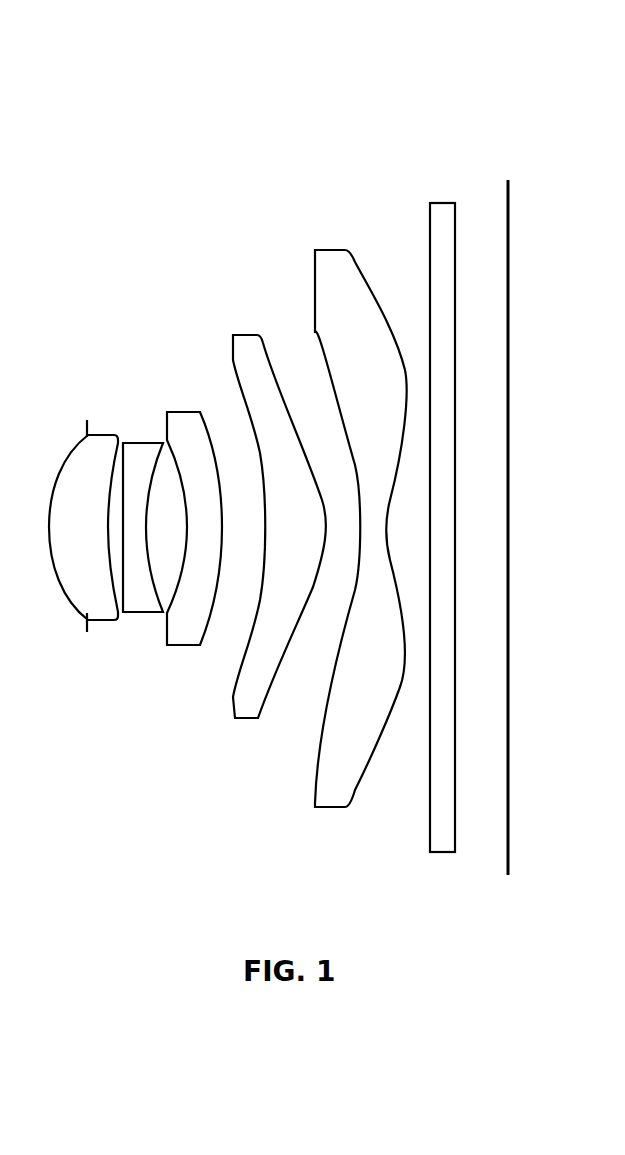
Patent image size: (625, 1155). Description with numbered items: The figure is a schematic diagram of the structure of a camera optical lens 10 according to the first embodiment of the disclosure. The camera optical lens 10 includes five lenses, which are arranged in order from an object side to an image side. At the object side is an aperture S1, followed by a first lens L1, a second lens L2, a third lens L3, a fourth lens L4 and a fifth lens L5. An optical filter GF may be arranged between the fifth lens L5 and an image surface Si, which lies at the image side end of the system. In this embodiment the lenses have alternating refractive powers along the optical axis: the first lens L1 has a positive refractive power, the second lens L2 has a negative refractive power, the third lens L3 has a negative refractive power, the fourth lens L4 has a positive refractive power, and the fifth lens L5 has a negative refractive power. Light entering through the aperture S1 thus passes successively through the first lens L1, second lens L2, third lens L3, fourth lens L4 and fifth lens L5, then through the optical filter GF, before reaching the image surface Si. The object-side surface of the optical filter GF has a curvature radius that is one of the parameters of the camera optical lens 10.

The camera optical lens 10 is at (302, 21).
The aperture S1 is at (83, 505).
The first lens L1 is at (84, 511).
The second lens L2 is at (143, 514).
The third lens L3 is at (194, 510).
The fourth lens L4 is at (279, 512).
The fifth lens L5 is at (361, 515).
The optical filter GF is at (444, 511).
The image surface Si is at (509, 510).